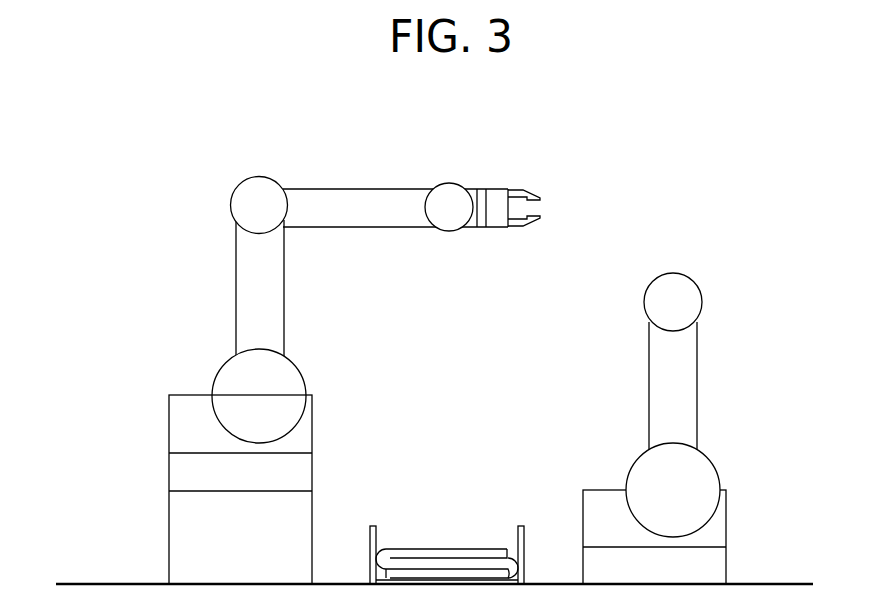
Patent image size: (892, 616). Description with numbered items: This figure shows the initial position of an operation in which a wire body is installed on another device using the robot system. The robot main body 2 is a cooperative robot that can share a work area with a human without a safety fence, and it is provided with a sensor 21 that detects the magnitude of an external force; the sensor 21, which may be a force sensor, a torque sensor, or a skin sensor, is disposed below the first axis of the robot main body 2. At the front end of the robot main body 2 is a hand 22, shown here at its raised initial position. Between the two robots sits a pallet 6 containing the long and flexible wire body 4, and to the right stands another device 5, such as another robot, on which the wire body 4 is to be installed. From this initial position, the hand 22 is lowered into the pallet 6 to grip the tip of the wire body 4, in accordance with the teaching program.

The robot main body 2 is at (205, 278).
The sensor 21 is at (169, 527).
The hand 22 is at (536, 190).
The another device 5 is at (698, 350).
The wire body 4 is at (454, 548).
The pallet 6 is at (370, 550).